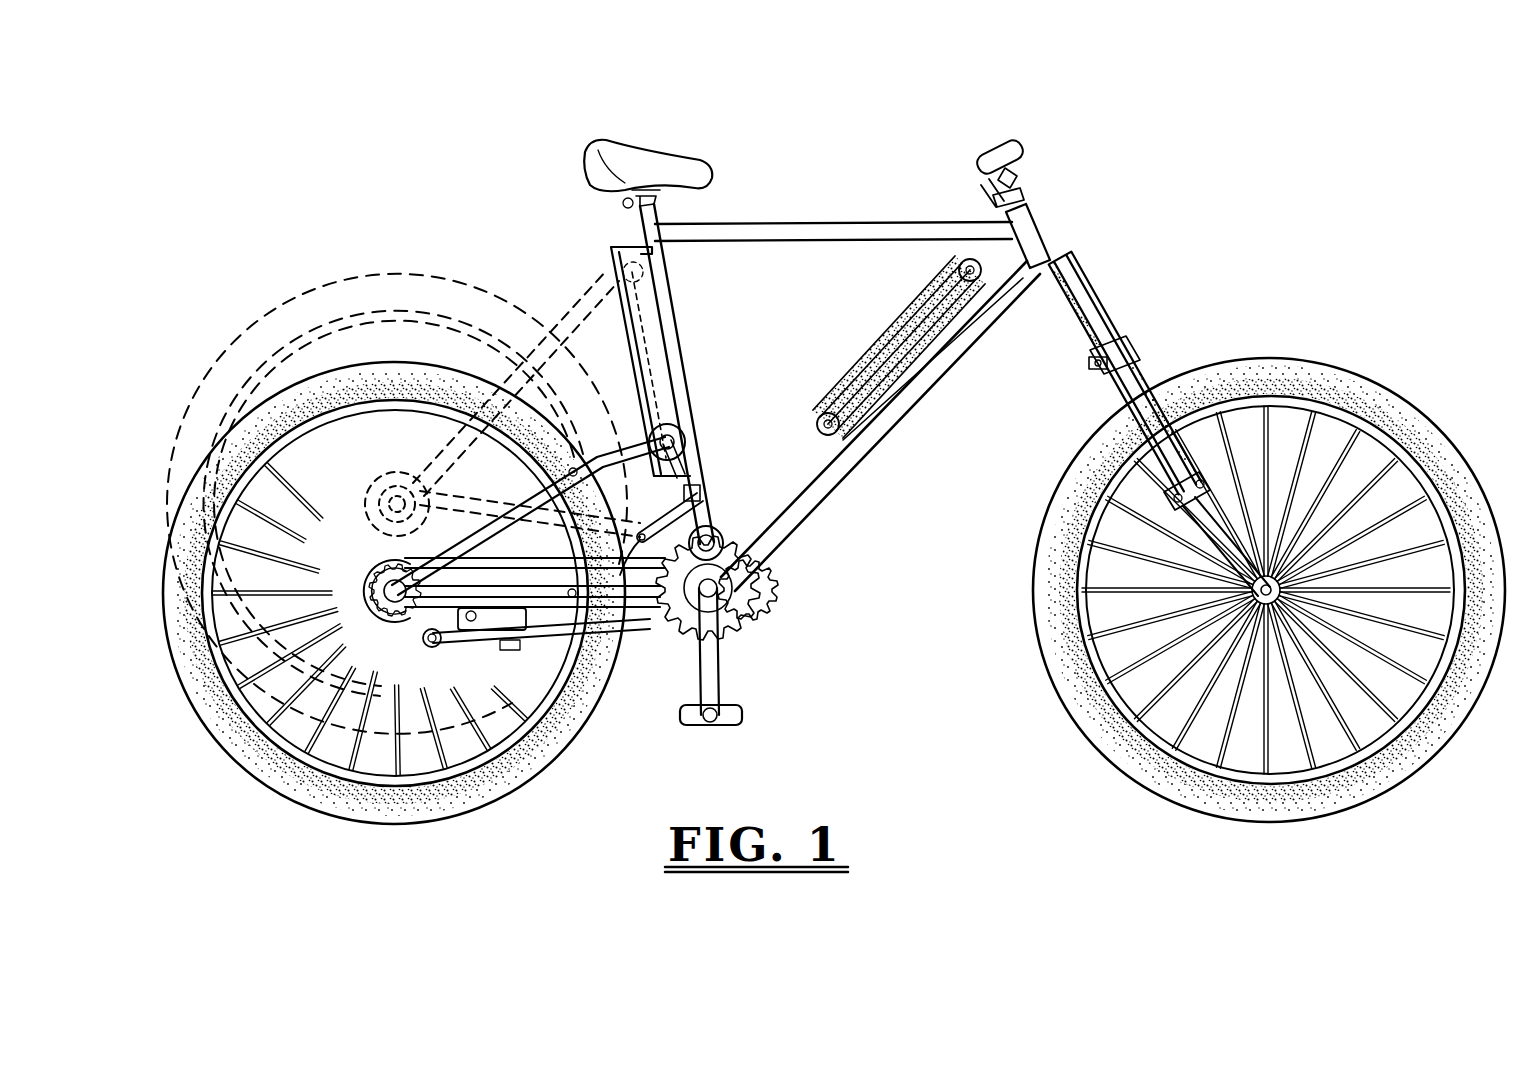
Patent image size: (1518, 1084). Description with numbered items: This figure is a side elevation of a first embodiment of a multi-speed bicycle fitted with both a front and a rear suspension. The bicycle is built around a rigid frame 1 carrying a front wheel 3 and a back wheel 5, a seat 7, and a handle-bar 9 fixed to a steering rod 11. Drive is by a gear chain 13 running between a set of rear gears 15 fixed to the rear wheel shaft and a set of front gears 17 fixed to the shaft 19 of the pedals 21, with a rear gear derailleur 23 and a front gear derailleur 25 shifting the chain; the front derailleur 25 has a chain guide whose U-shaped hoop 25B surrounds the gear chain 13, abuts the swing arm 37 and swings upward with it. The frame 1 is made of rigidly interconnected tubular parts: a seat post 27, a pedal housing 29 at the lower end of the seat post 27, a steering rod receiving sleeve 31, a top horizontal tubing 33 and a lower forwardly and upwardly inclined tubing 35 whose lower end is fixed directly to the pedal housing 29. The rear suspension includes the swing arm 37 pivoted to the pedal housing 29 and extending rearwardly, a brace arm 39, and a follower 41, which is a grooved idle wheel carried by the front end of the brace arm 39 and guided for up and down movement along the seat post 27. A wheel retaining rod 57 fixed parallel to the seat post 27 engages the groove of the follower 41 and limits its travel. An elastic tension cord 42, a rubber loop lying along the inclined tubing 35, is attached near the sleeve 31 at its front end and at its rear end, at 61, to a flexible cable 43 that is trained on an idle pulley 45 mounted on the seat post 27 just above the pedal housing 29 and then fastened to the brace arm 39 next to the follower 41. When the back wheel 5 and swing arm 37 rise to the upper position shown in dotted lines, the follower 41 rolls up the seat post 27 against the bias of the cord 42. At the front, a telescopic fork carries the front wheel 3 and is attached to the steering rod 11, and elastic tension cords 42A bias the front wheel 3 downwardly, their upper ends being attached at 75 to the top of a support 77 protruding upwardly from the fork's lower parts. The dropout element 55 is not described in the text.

The rigid frame 1 is at (789, 140).
The front wheel 3 is at (1370, 390).
The back wheel 5 is at (172, 628).
The seat 7 is at (640, 158).
The handle-bar 9 is at (1022, 155).
The steering rod 11 is at (980, 192).
The gear chain 13 is at (492, 545).
The set of rear gears 15 is at (398, 615).
The set of front gears 17 is at (762, 604).
The shaft of pedals 19 is at (742, 615).
The pedals 21 is at (740, 715).
The rear gear derailleur 23 is at (462, 647).
The front gear derailleur 25 is at (712, 505).
The U-shaped hoop 25B is at (583, 560).
The seat post 27 is at (668, 288).
The pedal housing 29 is at (745, 572).
The steering rod receiving sleeve 31 is at (1028, 275).
The top horizontal tubing 33 is at (905, 225).
The lower forwardly upwardly inclined tubing 35 is at (908, 368).
The swing arm 37 is at (540, 640).
The brace arm 39 is at (957, 270).
The follower 41 is at (686, 442).
The elastic tension cord 42 is at (905, 312).
The elastic tension cords 42A is at (1152, 378).
The flexible cable 43 is at (812, 438).
The idle pulley 45 is at (718, 535).
The dropout 55 is at (392, 567).
The wheel retaining rod 57 is at (628, 375).
The cord attachment point 61 is at (817, 422).
The cord upper attachment point 75 is at (1058, 262).
The support 77 is at (1104, 312).